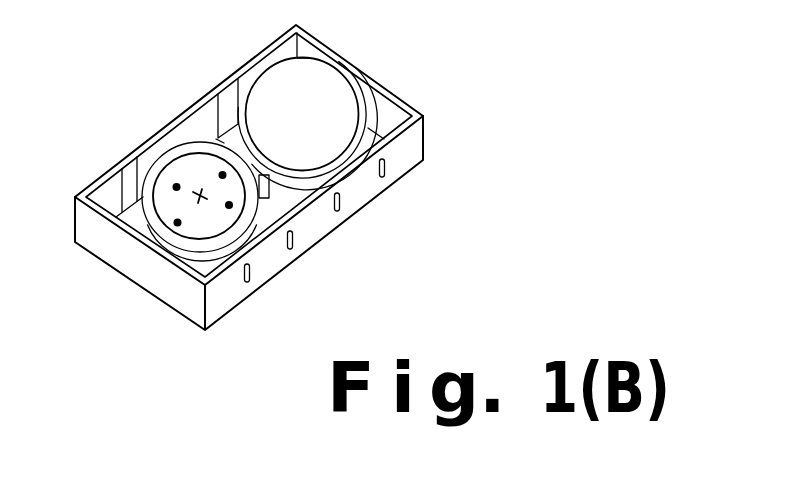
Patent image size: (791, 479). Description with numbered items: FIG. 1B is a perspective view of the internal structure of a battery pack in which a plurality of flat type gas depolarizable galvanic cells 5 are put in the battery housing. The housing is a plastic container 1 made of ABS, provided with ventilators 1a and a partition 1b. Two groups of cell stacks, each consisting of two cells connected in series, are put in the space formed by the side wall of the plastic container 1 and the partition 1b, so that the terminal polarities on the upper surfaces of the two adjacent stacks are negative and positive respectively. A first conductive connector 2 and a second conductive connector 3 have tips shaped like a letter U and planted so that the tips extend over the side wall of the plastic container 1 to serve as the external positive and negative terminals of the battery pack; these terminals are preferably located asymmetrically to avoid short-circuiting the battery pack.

The plastic container 1 is at (357, 68).
The ventilators 1a is at (387, 172).
The partition 1b is at (217, 138).
The first conductive connector 2 is at (222, 82).
The second conductive connector 3 is at (122, 167).
The flat type gas depolarizable galvanic cells 5 is at (218, 220).